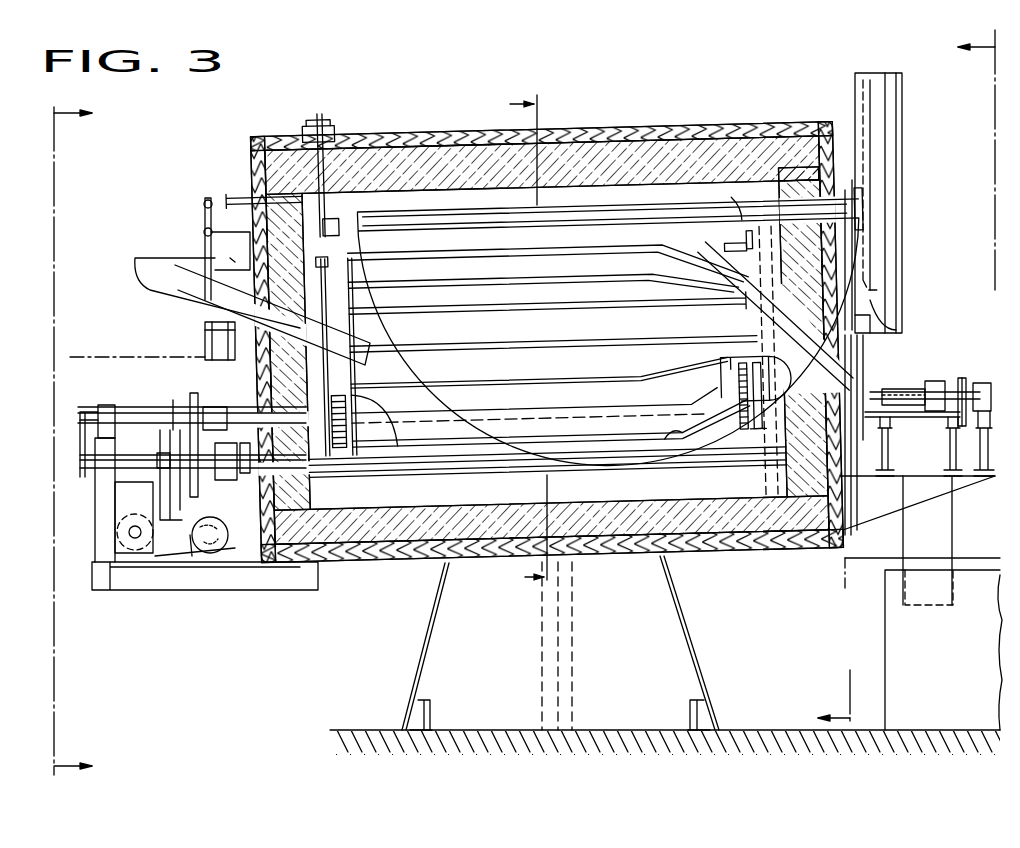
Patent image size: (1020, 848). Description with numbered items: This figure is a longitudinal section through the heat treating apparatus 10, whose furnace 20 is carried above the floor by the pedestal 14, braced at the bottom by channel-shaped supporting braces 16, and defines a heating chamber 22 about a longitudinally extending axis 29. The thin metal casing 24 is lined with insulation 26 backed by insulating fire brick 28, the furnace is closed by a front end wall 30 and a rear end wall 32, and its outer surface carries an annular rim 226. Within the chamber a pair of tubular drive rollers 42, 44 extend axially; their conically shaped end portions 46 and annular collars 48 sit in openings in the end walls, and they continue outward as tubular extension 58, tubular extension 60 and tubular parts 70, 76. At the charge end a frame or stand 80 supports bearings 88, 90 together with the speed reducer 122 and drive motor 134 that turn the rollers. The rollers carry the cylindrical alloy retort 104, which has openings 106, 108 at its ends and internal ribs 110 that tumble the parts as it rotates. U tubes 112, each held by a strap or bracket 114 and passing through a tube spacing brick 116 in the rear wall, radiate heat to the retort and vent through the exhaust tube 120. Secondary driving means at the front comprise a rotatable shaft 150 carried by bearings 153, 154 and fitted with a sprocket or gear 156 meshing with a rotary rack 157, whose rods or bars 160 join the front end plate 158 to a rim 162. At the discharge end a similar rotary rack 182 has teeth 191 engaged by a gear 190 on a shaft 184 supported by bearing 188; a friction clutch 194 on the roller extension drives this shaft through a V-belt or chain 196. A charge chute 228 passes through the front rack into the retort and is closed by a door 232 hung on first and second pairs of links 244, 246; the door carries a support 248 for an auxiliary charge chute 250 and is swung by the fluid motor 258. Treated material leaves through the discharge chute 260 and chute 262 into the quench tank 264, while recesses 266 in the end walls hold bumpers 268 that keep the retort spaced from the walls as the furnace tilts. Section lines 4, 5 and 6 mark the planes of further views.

The section line 4- 4 is at (518, 340).
The section line 5- 5 is at (81, 439).
The section line 6- 6 is at (895, 377).
The heat treating apparatus 10 is at (339, 118).
The pedestal 14 is at (438, 638).
The channel-shaped supporting brace 16 is at (705, 712).
The furnace 20 is at (370, 559).
The heating chamber 22 is at (384, 134).
The metal casing 24 is at (630, 127).
The insulation 26 is at (688, 129).
The insulating fire brick 28 is at (580, 176).
The longitudinally extending axis 29 is at (106, 356).
The front end wall 30 is at (262, 212).
The rear end wall 32 is at (840, 258).
The tubular drive roller 42 is at (443, 460).
The tubular drive roller 44 is at (332, 470).
The conically shaped end portion 46 is at (851, 490).
The annular collar 48 is at (771, 378).
The tubular extension 58 is at (895, 458).
The tubular extension 60 is at (215, 470).
The tubular part 70 is at (136, 455).
The tubular part 76 is at (940, 476).
The frame or stand 80 is at (150, 593).
The bearing 88 is at (210, 524).
The bearing 90 is at (100, 478).
The alloy retort 104 is at (690, 430).
The opening 106 is at (355, 320).
The opening 108 is at (752, 245).
The internal rib 110 is at (668, 384).
The U tube 112 is at (432, 215).
The strap or bracket 114 is at (340, 208).
The tube spacing brick 116 is at (780, 188).
The exhaust tube 120 is at (898, 148).
The speed reducer 122 is at (158, 562).
The drive motor 134 is at (225, 552).
The rotatable shaft 150 is at (130, 408).
The bearing 153 is at (104, 406).
The bearing 154 is at (214, 404).
The sprocket or gear 156 is at (346, 416).
The rotary rack 157 is at (320, 274).
The front end plate 158 is at (370, 260).
The rod or bar 160 is at (352, 274).
The rim 162 is at (356, 374).
The rotary rack 182 is at (757, 442).
The shaft 184 is at (915, 388).
The bearing 188 is at (938, 380).
The gear 190 is at (738, 427).
The teeth 191 is at (732, 219).
The friction clutch 194 is at (985, 396).
The V-belt or chain 196 is at (966, 384).
The annular rim 226 is at (240, 188).
The charge chute 228 is at (370, 346).
The door 232 is at (204, 205).
The first pair of links 244 is at (204, 222).
The second pair of links 246 is at (204, 240).
The support 248 is at (195, 290).
The auxiliary charge chute 250 is at (138, 290).
The fluid motor 258 is at (203, 340).
The discharge chute 260 is at (900, 388).
The chute 262 is at (950, 498).
The quench tank 264 is at (885, 600).
The recess 266 is at (776, 360).
The bumper 268 is at (717, 241).